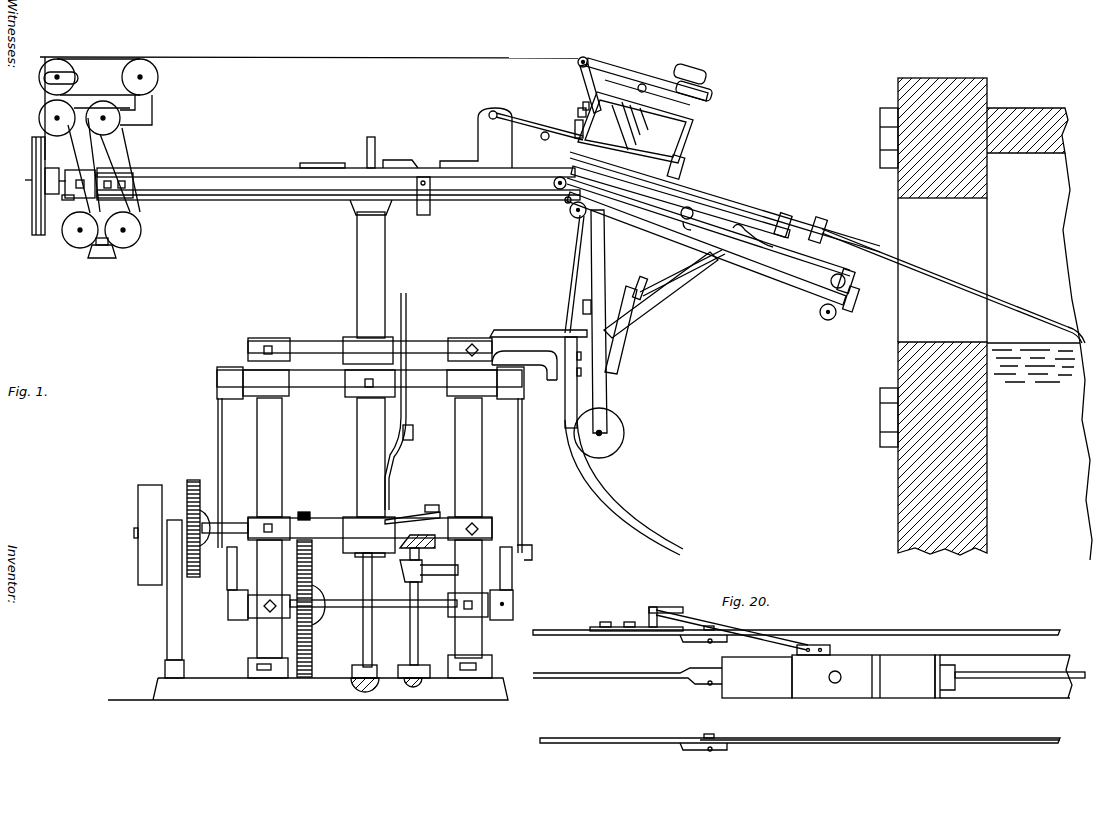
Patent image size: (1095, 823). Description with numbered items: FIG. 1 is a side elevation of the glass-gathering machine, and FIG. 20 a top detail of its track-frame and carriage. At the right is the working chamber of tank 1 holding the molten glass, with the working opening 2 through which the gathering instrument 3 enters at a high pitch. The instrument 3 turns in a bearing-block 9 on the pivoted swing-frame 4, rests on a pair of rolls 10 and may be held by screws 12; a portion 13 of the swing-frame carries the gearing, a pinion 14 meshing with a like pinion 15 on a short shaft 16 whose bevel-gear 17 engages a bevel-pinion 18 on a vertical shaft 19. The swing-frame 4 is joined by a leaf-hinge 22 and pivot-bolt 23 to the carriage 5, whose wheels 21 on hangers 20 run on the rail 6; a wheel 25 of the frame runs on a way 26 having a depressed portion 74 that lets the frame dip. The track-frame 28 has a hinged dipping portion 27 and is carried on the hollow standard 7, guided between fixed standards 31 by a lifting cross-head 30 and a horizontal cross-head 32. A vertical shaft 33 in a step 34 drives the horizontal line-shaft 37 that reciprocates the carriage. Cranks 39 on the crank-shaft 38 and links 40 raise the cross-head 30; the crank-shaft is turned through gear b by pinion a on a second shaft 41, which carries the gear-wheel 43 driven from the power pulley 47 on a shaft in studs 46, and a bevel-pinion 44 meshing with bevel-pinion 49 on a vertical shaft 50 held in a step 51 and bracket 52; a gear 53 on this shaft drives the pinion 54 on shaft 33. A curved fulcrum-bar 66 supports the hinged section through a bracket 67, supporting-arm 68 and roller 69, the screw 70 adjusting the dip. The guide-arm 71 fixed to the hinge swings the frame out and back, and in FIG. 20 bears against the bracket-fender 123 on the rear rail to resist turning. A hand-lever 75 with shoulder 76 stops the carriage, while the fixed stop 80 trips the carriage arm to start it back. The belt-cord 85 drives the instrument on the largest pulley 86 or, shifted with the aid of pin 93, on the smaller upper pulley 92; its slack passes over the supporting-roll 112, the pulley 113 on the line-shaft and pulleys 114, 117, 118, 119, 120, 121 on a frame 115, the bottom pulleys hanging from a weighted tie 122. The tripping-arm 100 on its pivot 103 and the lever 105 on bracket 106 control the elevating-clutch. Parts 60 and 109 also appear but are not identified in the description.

In FIG. 1, the tank 1 is at (1039, 334).
In FIG. 1, the working opening 2 is at (933, 316).
In FIG. 1, the gathering instrument 3 is at (950, 284).
In FIG. 20, the gathering instrument 3 is at (1020, 686).
In FIG. 1, the swing-frame 4 is at (740, 194).
In FIG. 1, the carriage 5 is at (832, 260).
In FIG. 20, the carriage 5 is at (1036, 660).
In FIG. 20, the rail 6 is at (796, 650).
In FIG. 1, the standard 7 is at (390, 347).
In FIG. 1, the bearing-block 9 is at (635, 127).
In FIG. 1, the rolls 10 is at (826, 223).
In FIG. 1, the screws 12 is at (690, 160).
In FIG. 1, the portion of swing-frame 13 is at (569, 131).
In FIG. 1, the pinion 14 is at (634, 130).
In FIG. 1, the pinion 15 is at (643, 124).
In FIG. 1, the short shaft 16 is at (652, 119).
In FIG. 1, the bevel-gear 17 is at (618, 134).
In FIG. 1, the bevel-pinion 18 is at (578, 97).
In FIG. 1, the vertical shaft 19 is at (577, 112).
In FIG. 1, the hangers 20 is at (564, 200).
In FIG. 1, the wheels 21 is at (560, 176).
In FIG. 20, the leaf-hinge 22 is at (873, 671).
In FIG. 1, the pivot-bolt 23 is at (680, 202).
In FIG. 1, the wheel 25 is at (787, 216).
In FIG. 1, the way 26 is at (770, 244).
In FIG. 1, the hinged track-section 27 is at (706, 248).
In FIG. 20, the hinged track-section 27 is at (880, 750).
In FIG. 1, the track-frame 28 is at (322, 184).
In FIG. 20, the track-frame 28 is at (800, 747).
In FIG. 1, the cross-head 30 is at (370, 383).
In FIG. 1, the fixed standards 31 is at (370, 538).
In FIG. 1, the horizontal cross-head 32 is at (325, 332).
In FIG. 1, the shaft 33 is at (367, 145).
In FIG. 1, the step 34 is at (352, 684).
In FIG. 1, the horizontal shaft 37 is at (66, 200).
In FIG. 1, the crank-shaft 38 is at (348, 603).
In FIG. 1, the cranks 39 is at (513, 578).
In FIG. 1, the links 40 is at (216, 452).
In FIG. 1, the second shaft 41 is at (236, 523).
In FIG. 1, the gear-wheel 43 is at (198, 539).
In FIG. 1, the bevel-pinion 44 is at (427, 545).
In FIG. 1, the studs 46 is at (167, 626).
In FIG. 1, the pulley 47 is at (138, 552).
In FIG. 1, the bevel-pinion 49 is at (399, 560).
In FIG. 1, the vertical shaft 50 is at (410, 630).
In FIG. 1, the step 51 is at (418, 688).
In FIG. 1, the bracket 52 is at (405, 570).
In FIG. 1, the gear 53 is at (422, 665).
In FIG. 1, the pinion 54 is at (358, 667).
In FIG. 1, the roller 60 is at (680, 215).
In FIG. 1, the fulcrum-bar 66 is at (618, 520).
In FIG. 1, the bracket 67 is at (640, 326).
In FIG. 1, the supporting-arm 68 is at (612, 397).
In FIG. 1, the roller 69 is at (613, 433).
In FIG. 1, the screw 70 is at (644, 288).
In FIG. 1, the guide-arm 71 is at (495, 111).
In FIG. 20, the guide-arm 71 is at (740, 630).
In FIG. 1, the depressed portion 74 is at (736, 262).
In FIG. 1, the hand-lever 75 is at (544, 132).
In FIG. 1, the shoulder 76 is at (536, 145).
In FIG. 1, the stop 80 is at (580, 328).
In FIG. 1, the belt-cord 85 is at (363, 51).
In FIG. 1, the largest pulley 86 is at (672, 88).
In FIG. 1, the upper pulley 92 is at (708, 80).
In FIG. 1, the pin 93 is at (710, 97).
In FIG. 1, the tripping-arm 100 is at (412, 510).
In FIG. 1, the pivot 103 is at (437, 500).
In FIG. 1, the lever 105 is at (403, 401).
In FIG. 1, the bracket 106 is at (421, 431).
In FIG. 1, the bracket 109 is at (359, 155).
In FIG. 1, the supporting-roll 112 is at (590, 52).
In FIG. 1, the pulley 113 is at (45, 195).
In FIG. 1, the pulley 114 is at (57, 99).
In FIG. 1, the frame 115 is at (92, 77).
In FIG. 1, the pulley 117 is at (57, 118).
In FIG. 1, the pulley 118 is at (81, 183).
In FIG. 1, the top pulley 119 is at (102, 118).
In FIG. 1, the bottom pulley 120 is at (141, 230).
In FIG. 1, the top pulley 121 is at (158, 76).
In FIG. 1, the weighted tie 122 is at (101, 257).
In FIG. 1, the bracket-fender 123 is at (476, 138).
In FIG. 20, the bracket-fender 123 is at (636, 611).
In FIG. 1, the pinion a is at (309, 510).
In FIG. 1, the gear b is at (297, 640).